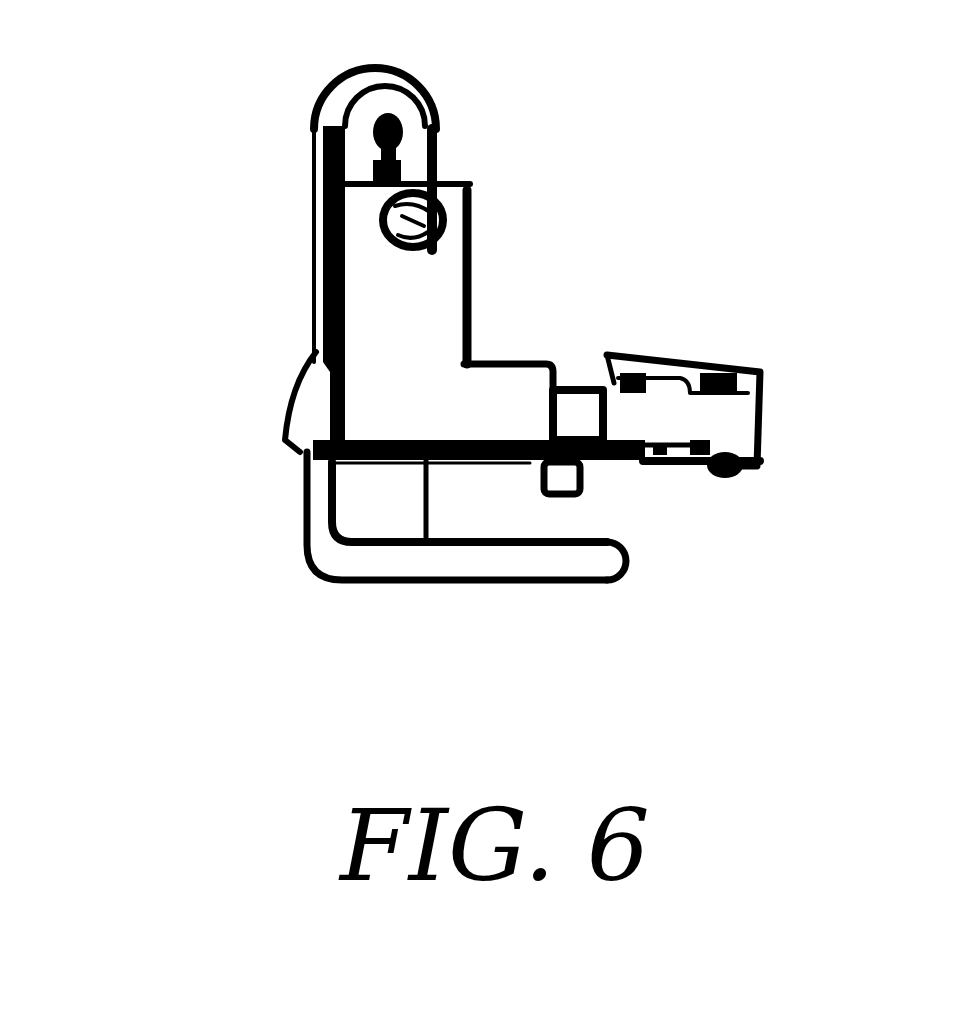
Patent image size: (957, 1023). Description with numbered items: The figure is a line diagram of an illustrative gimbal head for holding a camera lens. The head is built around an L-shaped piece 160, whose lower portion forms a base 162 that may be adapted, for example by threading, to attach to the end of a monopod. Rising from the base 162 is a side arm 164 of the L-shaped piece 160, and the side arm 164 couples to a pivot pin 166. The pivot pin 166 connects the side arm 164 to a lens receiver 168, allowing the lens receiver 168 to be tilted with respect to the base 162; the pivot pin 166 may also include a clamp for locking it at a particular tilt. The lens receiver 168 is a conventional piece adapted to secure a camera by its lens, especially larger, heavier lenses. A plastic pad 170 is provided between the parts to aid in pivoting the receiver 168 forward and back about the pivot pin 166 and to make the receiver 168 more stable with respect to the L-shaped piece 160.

The L-shaped piece 160 is at (313, 548).
The base 162 is at (627, 556).
The side arm 164 is at (316, 276).
The pivot pin 166 is at (440, 200).
The lens receiver 168 is at (567, 375).
The plastic pad 170 is at (300, 425).